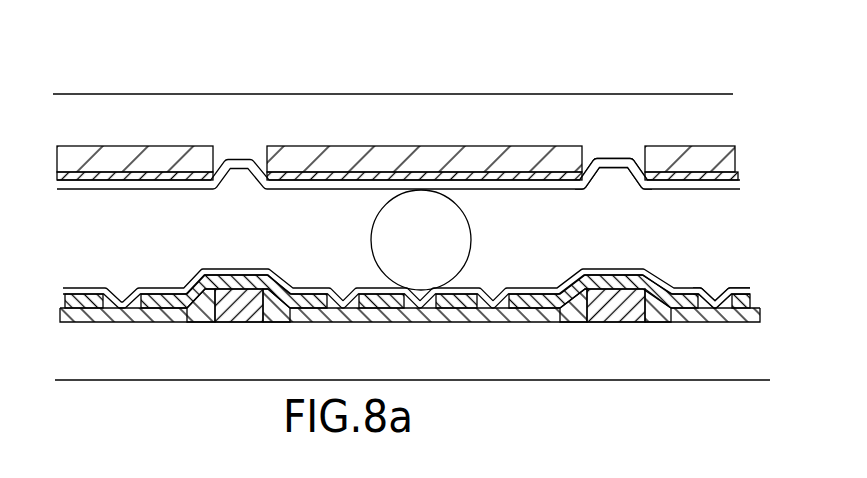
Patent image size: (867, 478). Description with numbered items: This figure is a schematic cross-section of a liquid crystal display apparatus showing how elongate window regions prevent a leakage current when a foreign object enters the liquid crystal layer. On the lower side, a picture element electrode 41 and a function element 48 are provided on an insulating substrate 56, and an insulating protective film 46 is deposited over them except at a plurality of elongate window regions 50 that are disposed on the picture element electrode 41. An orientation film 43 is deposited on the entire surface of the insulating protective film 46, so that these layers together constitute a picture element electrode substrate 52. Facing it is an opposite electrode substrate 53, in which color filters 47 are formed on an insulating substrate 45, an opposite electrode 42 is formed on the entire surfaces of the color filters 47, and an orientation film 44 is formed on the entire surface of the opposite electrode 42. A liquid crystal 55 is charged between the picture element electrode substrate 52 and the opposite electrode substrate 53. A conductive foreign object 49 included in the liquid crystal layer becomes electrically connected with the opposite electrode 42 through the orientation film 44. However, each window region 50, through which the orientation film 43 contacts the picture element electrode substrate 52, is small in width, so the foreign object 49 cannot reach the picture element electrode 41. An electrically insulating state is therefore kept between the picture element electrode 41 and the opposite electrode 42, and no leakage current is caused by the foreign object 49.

The picture element electrode 41 is at (312, 297).
The opposite electrode 42 is at (291, 176).
The orientation film 43 is at (521, 289).
The orientation film 44 is at (509, 190).
The insulating substrate 45 is at (612, 108).
The insulating protective film 46 is at (216, 275).
The color filters 47 is at (487, 157).
The function element 48 is at (608, 290).
The conductive foreign object 49 is at (405, 258).
The elongate window regions 50 is at (347, 322).
The picture element electrode substrate 52 is at (707, 283).
The opposite electrode substrate 53 is at (638, 199).
The liquid crystal 55 is at (100, 249).
The insulating substrate 56 is at (618, 370).